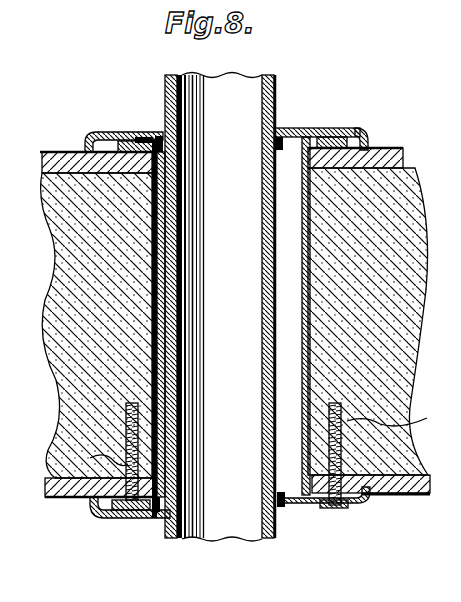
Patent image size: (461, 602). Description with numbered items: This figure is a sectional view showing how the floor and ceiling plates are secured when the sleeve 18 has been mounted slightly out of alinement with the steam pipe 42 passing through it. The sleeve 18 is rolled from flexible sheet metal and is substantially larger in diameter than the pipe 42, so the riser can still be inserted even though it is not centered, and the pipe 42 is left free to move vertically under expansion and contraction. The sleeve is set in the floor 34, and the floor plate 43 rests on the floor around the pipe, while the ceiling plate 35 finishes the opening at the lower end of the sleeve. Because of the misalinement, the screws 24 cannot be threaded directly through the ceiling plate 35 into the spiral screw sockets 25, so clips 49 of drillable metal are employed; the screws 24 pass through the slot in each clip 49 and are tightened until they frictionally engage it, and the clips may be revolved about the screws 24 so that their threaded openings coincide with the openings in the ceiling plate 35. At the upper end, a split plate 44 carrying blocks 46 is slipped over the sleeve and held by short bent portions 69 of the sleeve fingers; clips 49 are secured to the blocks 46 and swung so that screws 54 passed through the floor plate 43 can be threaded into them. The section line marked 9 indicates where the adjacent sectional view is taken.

The section line 9 is at (82, 138).
The sleeve 18 is at (300, 378).
The screw 24 is at (98, 513).
The spiral screw socket 25 is at (418, 424).
The floor 34 is at (403, 150).
The ceiling plate 35 is at (351, 130).
The steam pipe 42 is at (273, 115).
The floor plate 43 is at (108, 133).
The plate 44 is at (372, 133).
The block 46 is at (96, 133).
The clip 49 is at (136, 137).
The screw 54 is at (318, 130).
The short portion 69 is at (152, 519).